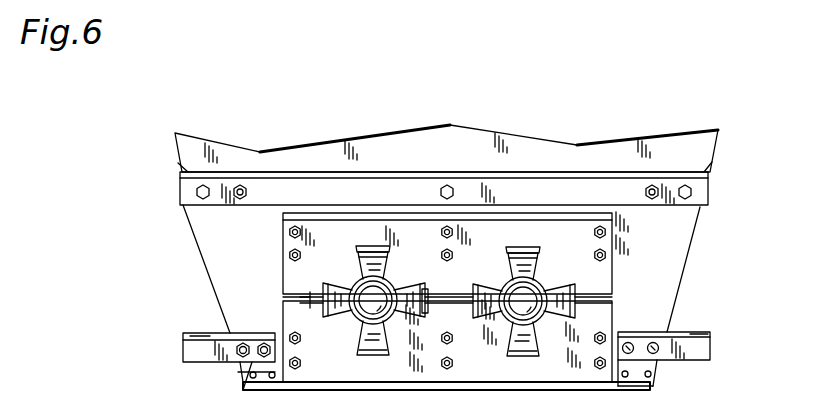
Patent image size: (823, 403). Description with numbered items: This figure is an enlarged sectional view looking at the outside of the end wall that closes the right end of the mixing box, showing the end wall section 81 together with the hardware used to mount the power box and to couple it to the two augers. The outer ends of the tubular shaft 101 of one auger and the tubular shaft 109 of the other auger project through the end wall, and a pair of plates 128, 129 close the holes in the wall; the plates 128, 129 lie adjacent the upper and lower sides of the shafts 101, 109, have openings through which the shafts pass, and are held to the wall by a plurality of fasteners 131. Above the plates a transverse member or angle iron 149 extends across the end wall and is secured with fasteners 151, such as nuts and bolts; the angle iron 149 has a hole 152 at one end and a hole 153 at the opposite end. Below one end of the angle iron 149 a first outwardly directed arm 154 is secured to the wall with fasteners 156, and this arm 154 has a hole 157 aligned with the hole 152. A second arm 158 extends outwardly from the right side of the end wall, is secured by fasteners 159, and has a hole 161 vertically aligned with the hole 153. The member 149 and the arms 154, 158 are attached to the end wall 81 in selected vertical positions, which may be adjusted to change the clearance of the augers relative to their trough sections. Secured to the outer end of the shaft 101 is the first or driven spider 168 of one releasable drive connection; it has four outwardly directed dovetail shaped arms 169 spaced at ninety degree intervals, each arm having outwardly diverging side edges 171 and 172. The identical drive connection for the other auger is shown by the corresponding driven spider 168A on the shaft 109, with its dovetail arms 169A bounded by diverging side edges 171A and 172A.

The end wall section 81 is at (462, 140).
The tubular shaft 101 is at (530, 311).
The tubular shaft 109 is at (368, 307).
The plate 128 is at (291, 273).
The plate 129 is at (291, 306).
The fasteners 131 is at (302, 233).
The transverse member or angle iron 149 is at (705, 199).
The fasteners 151 is at (240, 199).
The hole 152 is at (186, 166).
The hole 153 is at (703, 168).
The first outwardly directed arm 154 is at (196, 354).
The fasteners 156 is at (262, 357).
The hole 157 is at (198, 333).
The second arm 158 is at (686, 349).
The fasteners 159 is at (655, 352).
The hole 161 is at (702, 333).
The driven spider 168 is at (524, 252).
The driven spider 168A is at (369, 248).
The dovetail shaped arm 169 is at (538, 255).
The dovetail shaped arm 169A is at (389, 250).
The side edge 171 is at (510, 263).
The side edge 171A is at (358, 259).
The side edge 172 is at (536, 265).
The side edge 172A is at (386, 266).